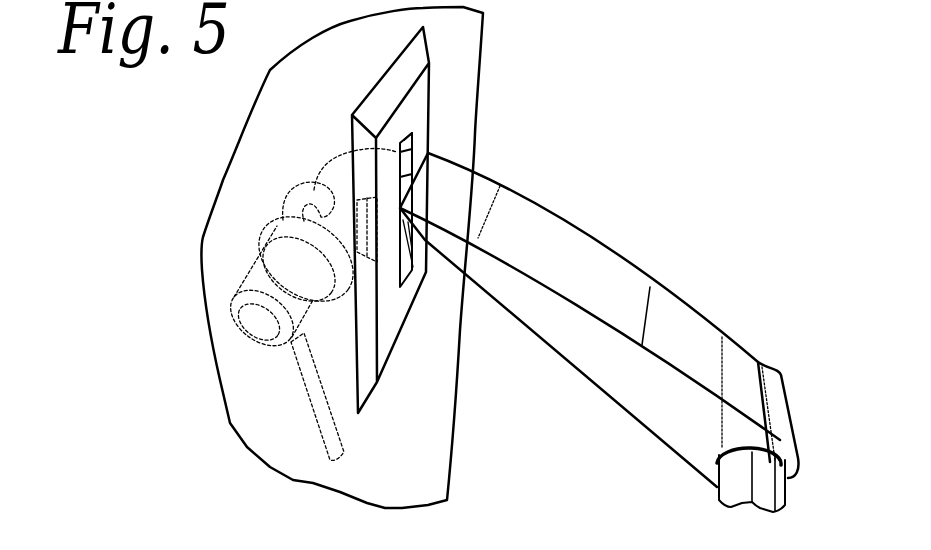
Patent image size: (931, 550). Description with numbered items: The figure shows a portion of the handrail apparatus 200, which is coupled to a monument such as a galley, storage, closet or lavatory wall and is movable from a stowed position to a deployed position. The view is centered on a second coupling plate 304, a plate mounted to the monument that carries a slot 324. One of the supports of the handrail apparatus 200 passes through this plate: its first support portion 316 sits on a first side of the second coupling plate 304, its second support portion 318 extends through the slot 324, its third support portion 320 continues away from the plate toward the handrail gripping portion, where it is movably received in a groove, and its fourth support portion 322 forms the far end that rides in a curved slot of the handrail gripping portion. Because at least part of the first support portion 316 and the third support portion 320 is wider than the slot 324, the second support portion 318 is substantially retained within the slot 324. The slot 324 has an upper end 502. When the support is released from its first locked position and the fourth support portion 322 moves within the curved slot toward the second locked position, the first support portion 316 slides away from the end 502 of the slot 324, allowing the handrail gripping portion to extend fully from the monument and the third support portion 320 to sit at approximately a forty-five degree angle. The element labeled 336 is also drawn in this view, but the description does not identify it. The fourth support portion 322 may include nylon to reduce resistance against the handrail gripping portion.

The handrail apparatus 200 is at (712, 543).
The second coupling plate 304 is at (387, 85).
The first support portion 316 is at (252, 320).
The second support portion 318 is at (403, 220).
The third support portion 320 is at (523, 296).
The fourth support portion 322 is at (769, 477).
The slot 324 is at (402, 152).
The rod 336 is at (318, 402).
The end of the slot 502 is at (412, 133).